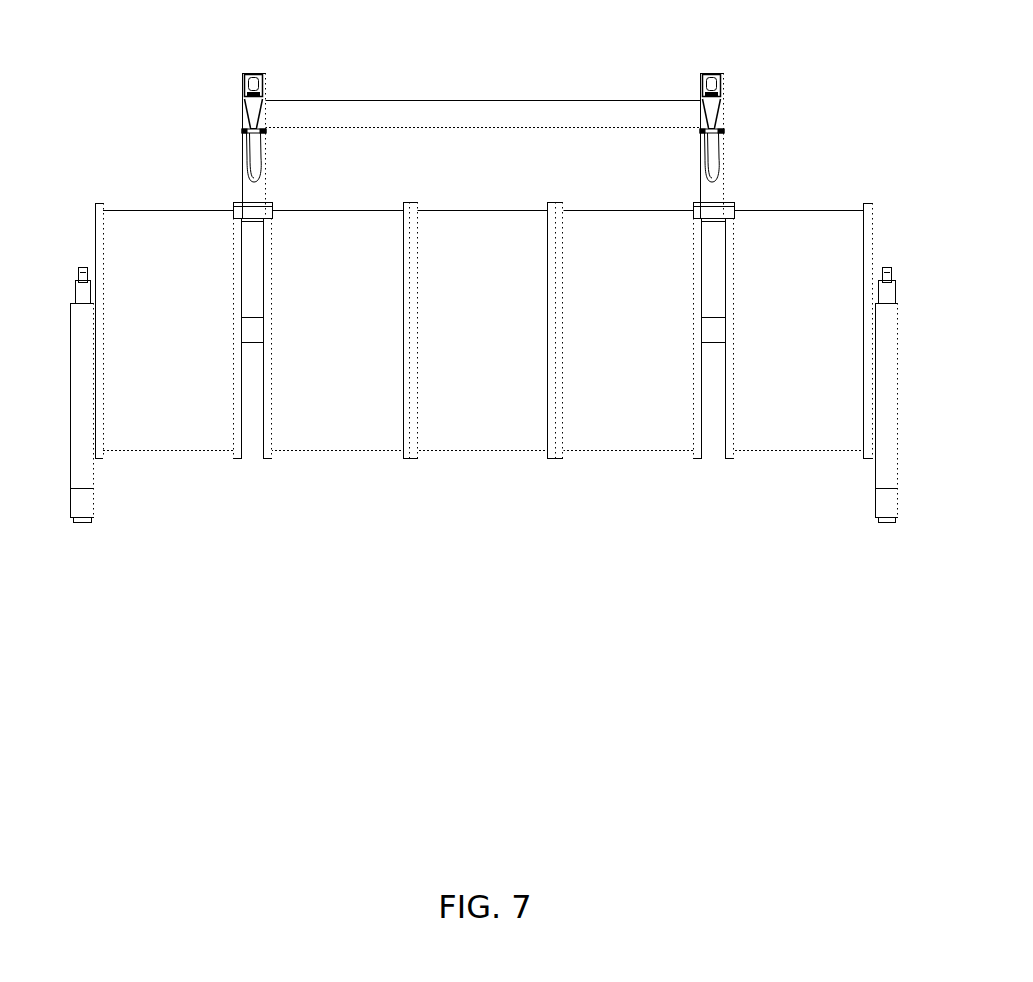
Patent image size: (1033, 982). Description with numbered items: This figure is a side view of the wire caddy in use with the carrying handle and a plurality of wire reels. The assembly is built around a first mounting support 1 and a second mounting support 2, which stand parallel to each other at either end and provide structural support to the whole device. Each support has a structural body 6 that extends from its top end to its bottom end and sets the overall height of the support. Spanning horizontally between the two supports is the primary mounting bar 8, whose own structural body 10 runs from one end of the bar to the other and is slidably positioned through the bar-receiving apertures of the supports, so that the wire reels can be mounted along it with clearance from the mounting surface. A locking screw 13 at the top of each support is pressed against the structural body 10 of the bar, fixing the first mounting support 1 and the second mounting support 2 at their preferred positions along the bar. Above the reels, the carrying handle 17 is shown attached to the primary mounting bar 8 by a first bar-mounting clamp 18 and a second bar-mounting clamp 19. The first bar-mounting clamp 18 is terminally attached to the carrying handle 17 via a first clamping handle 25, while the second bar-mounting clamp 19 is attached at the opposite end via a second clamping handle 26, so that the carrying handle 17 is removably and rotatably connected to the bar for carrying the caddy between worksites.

The first mounting support 1 is at (88, 548).
The second mounting support 2 is at (880, 548).
The structural body 6 is at (74, 412).
The primary mounting bar 8 is at (254, 368).
The structural body 10 is at (711, 340).
The locking screw 13 is at (82, 267).
The carrying handle 17 is at (515, 115).
The first bar-mounting clamp 18 is at (247, 195).
The second bar-mounting clamp 19 is at (708, 193).
The first clamping handle 25 is at (256, 163).
The second clamping handle 26 is at (714, 163).